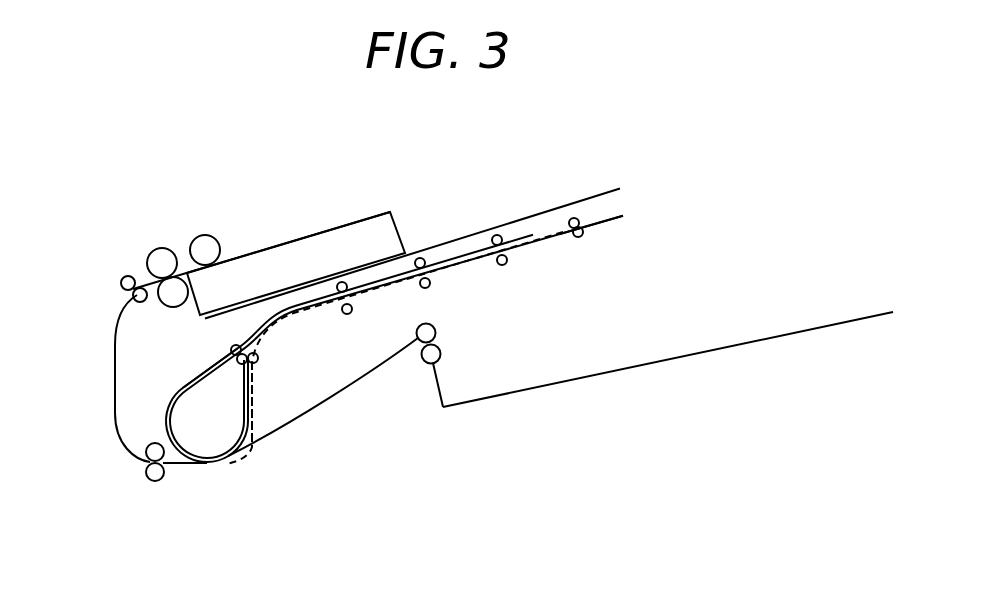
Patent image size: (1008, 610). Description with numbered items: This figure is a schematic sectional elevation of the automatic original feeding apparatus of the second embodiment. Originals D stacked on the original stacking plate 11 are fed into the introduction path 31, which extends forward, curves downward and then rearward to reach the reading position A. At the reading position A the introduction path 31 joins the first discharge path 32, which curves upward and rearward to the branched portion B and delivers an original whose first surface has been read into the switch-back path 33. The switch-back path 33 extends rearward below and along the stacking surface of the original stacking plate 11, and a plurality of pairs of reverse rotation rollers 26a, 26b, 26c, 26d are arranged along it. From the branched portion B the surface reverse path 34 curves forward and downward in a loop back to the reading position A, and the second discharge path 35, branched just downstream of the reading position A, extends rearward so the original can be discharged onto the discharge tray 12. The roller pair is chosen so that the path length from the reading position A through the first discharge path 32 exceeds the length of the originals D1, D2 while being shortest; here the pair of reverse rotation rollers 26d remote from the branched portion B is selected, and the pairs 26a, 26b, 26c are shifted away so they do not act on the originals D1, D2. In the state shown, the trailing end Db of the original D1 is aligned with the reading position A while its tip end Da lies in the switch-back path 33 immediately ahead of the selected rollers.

The original stacking plate 11 is at (465, 250).
The discharge tray 12 is at (638, 365).
The pair of reverse rotation rollers 26a is at (343, 282).
The pair of reverse rotation rollers 26b is at (420, 258).
The pair of reverse rotation rollers 26c is at (503, 234).
The pair of reverse rotation rollers 26d is at (577, 218).
The introduction path 31 is at (113, 357).
The first discharge path 32 is at (243, 433).
The switch-back path 33 is at (613, 217).
The surface reverse path 34 is at (212, 378).
The second discharge path 35 is at (373, 376).
The reading position A is at (212, 465).
The branched portion B is at (255, 352).
The original D is at (281, 252).
The tip end of the original Da is at (565, 237).
The trailing end of the original Db is at (220, 465).
The original D1 is at (257, 410).
The original D2 is at (185, 383).